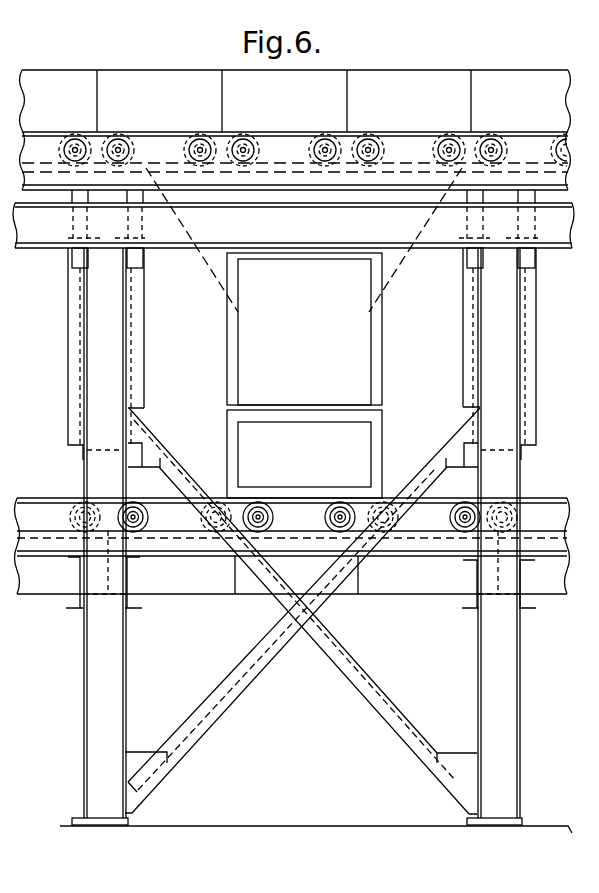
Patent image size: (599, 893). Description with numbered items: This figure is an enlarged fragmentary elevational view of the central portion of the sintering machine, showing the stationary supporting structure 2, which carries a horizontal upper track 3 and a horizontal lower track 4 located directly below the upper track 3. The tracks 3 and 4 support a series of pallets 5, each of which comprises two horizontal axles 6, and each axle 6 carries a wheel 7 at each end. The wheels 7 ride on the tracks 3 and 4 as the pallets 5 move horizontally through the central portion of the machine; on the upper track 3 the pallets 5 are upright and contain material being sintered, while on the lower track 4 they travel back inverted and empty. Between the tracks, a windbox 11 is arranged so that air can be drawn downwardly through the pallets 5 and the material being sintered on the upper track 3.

The stationary supporting structure 2 is at (118, 664).
The upper track 3 is at (295, 162).
The lower track 4 is at (409, 533).
The pallet 5 is at (117, 83).
The axle 6 is at (182, 137).
The wheel 7 is at (434, 152).
The windbox 11 is at (291, 328).